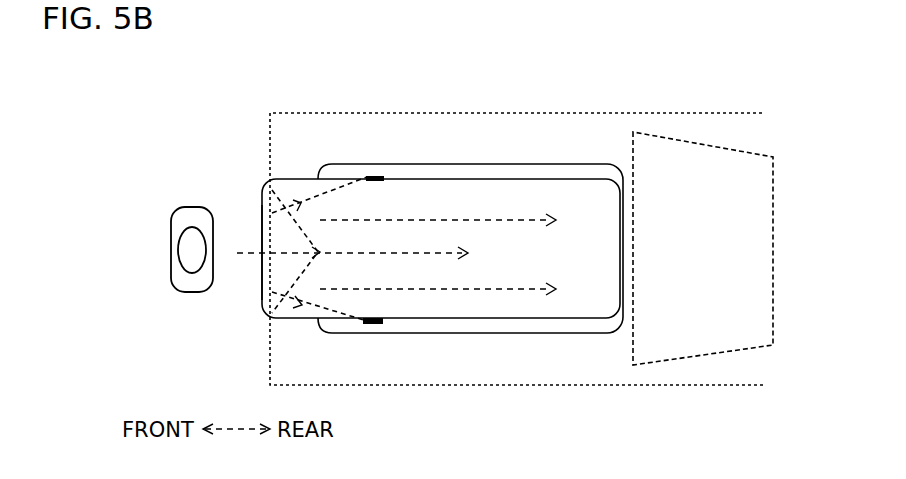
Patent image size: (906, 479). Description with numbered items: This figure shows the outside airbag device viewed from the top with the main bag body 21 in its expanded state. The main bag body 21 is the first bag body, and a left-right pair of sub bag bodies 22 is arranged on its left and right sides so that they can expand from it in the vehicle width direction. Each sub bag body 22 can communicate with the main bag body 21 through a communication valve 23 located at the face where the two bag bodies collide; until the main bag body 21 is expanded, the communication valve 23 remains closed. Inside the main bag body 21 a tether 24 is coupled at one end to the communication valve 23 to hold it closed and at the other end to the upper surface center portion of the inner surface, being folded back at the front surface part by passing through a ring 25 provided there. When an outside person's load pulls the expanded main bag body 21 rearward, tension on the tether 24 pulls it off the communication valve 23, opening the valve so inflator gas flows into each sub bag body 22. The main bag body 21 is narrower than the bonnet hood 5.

The bonnet hood 5 is at (607, 143).
The main bag body 21 is at (302, 178).
The sub bag body 22 is at (503, 166).
The communication valve 23 is at (371, 177).
The tether 24 is at (297, 205).
The ring 25 is at (258, 220).